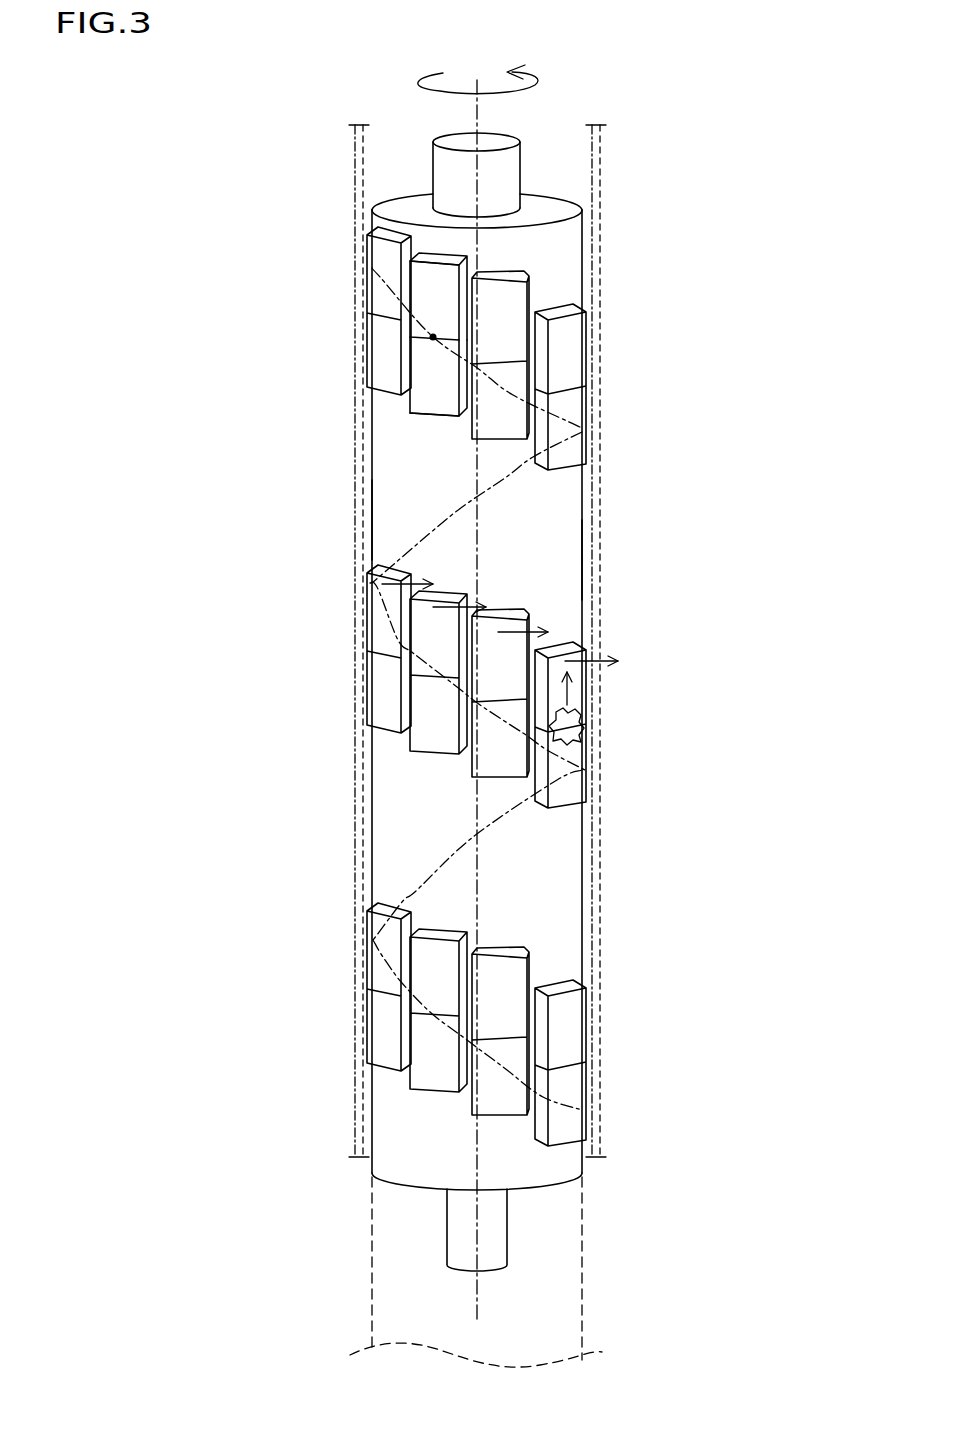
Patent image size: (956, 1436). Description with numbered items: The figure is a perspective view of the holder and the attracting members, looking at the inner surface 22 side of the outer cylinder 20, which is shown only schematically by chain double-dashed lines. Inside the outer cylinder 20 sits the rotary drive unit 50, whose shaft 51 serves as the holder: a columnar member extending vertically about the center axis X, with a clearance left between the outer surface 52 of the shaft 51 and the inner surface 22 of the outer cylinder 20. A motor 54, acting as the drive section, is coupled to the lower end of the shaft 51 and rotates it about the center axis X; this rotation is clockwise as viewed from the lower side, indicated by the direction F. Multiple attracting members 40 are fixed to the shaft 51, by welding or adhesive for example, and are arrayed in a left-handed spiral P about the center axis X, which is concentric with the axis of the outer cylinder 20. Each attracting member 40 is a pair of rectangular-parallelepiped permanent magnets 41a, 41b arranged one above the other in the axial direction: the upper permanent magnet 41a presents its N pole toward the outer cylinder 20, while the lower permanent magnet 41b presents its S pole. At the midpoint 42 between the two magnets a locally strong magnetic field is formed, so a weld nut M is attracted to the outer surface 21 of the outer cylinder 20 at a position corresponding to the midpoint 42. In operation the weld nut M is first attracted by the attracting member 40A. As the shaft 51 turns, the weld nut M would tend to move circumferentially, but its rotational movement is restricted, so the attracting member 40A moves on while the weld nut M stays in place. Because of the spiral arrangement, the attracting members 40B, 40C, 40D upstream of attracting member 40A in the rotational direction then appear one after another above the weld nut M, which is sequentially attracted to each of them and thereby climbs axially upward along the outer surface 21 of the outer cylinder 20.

The outer cylinder 20 is at (355, 412).
The outer surface 21 is at (355, 483).
The inner surface 22 is at (374, 521).
The attracting members 40 is at (383, 302).
The attracting member 40A is at (566, 802).
The attracting member 40B is at (472, 759).
The attracting member 40C is at (436, 729).
The attracting member 40D is at (383, 692).
The permanent magnet 41a is at (438, 268).
The permanent magnet 41b is at (443, 398).
The midpoint 42 is at (430, 337).
The rotary drive unit 50 is at (560, 608).
The shaft 51 is at (560, 572).
The outer surface 52 is at (550, 542).
The motor 54 is at (581, 1248).
The N-pole N is at (428, 273).
The S-pole S is at (425, 392).
The spiral P is at (505, 478).
The center axis X is at (478, 105).
The direction F is at (543, 82).
The weld nut M is at (570, 702).